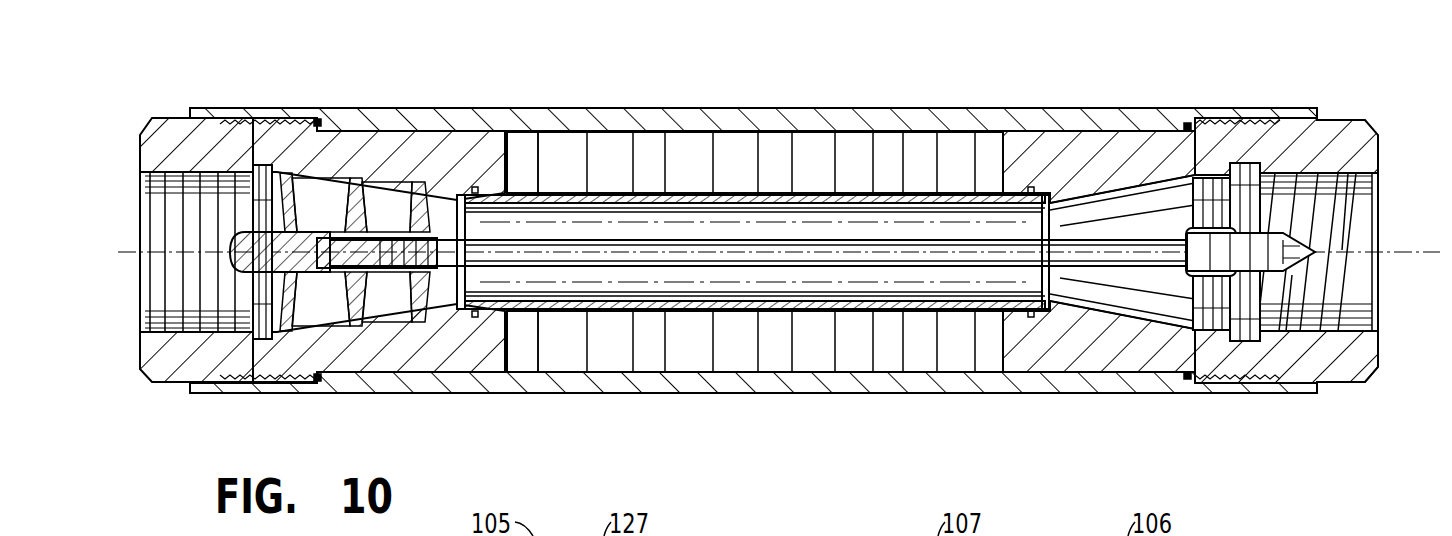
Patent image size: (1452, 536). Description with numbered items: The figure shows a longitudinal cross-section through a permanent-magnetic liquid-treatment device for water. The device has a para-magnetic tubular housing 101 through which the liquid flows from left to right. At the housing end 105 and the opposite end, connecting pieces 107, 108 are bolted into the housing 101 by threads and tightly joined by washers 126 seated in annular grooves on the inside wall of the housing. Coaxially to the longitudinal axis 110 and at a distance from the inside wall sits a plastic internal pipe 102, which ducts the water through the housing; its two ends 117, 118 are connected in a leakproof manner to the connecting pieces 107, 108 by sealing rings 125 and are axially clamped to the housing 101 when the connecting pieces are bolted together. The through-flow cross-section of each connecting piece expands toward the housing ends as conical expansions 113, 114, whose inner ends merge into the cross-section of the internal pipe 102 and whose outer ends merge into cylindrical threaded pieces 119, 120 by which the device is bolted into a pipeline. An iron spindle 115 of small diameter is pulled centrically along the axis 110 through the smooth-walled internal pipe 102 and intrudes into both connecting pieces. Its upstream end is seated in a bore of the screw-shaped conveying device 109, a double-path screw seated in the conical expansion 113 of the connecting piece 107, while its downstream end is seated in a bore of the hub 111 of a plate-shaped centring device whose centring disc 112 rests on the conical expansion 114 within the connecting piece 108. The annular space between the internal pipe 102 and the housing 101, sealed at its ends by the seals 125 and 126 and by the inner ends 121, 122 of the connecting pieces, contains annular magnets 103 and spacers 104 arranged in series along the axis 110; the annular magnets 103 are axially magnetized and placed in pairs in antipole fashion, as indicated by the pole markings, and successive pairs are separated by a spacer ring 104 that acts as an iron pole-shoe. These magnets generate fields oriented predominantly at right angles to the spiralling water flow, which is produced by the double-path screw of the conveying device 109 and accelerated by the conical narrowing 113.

The tubular housing 101 is at (935, 120).
The internal pipe 102 is at (818, 310).
The annular magnets 103 is at (582, 355).
The spacer rings 104 is at (530, 140).
The housing end 105 is at (202, 118).
The connecting piece 107 is at (170, 128).
The connecting piece 108 is at (1358, 362).
The conveying device 109 is at (262, 340).
The longitudinal axis 110 is at (688, 262).
The hub 111 is at (1340, 272).
The centring disc 112 is at (1175, 313).
The conical expansion 113 is at (330, 322).
The conical expansion 114 is at (1110, 310).
The iron spindle 115 is at (910, 318).
The internal pipe end 117 is at (443, 290).
The internal pipe end 118 is at (1067, 312).
The threaded piece 119 is at (175, 330).
The threaded piece 120 is at (1376, 183).
The inner end of connecting piece 121 is at (512, 150).
The inner end of connecting piece 122 is at (1000, 135).
The sealing rings 125 is at (470, 310).
The washers 126 is at (317, 122).